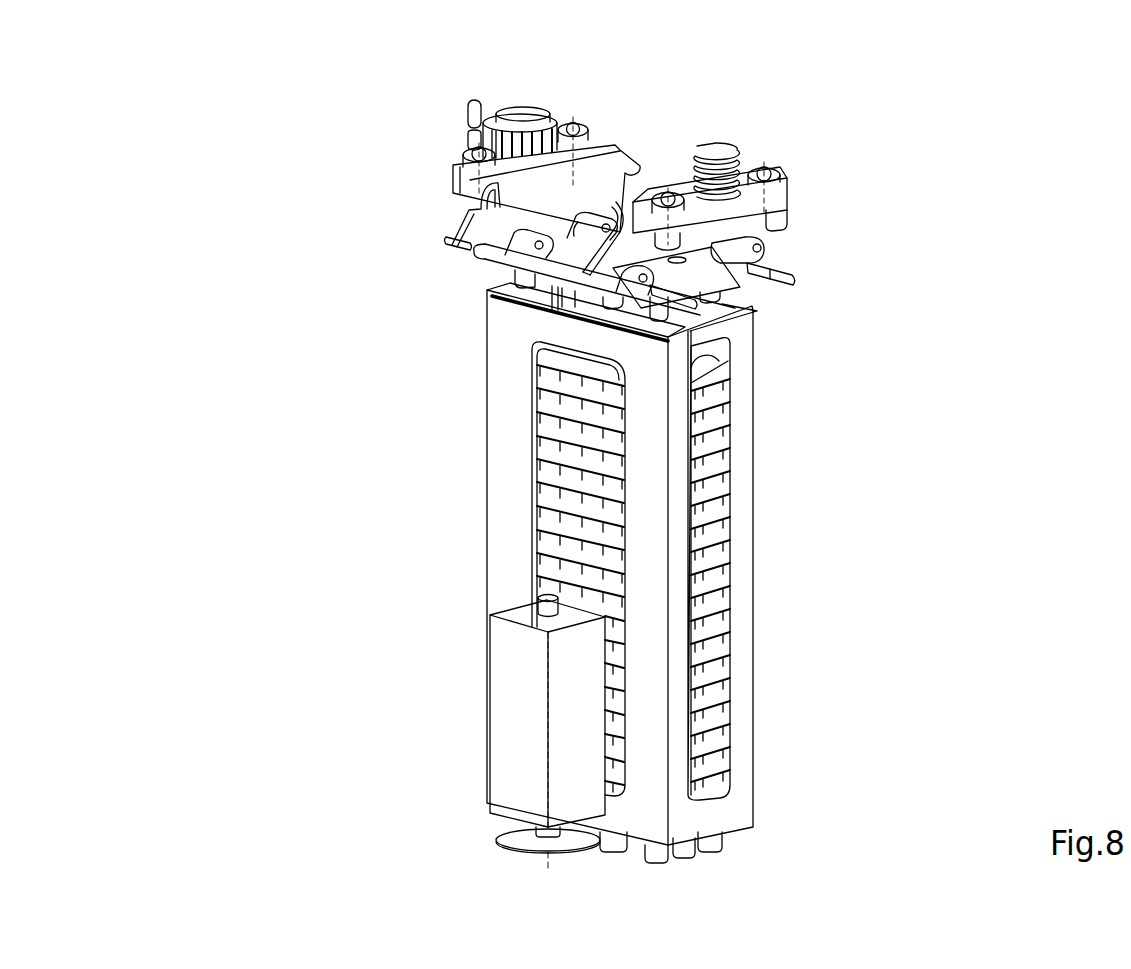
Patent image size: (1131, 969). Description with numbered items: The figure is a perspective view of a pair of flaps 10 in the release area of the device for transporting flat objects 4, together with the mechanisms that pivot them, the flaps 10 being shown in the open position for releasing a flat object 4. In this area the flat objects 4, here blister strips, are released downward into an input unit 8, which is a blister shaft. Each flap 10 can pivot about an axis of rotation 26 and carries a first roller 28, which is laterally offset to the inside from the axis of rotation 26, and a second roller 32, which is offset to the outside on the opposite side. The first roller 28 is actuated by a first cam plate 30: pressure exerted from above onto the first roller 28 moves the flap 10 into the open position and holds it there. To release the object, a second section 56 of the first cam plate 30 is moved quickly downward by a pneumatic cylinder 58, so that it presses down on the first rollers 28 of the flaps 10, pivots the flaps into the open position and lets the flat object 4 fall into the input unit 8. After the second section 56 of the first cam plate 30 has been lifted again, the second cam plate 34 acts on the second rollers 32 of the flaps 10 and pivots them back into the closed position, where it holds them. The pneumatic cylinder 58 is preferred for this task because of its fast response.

The flat object 4 is at (712, 466).
The input unit 8 is at (596, 577).
The flap 10 is at (767, 250).
The axis of rotation 26 is at (785, 288).
The first roller 28 is at (498, 250).
The first cam plate 30 is at (407, 185).
The second section of the first cam plate 56 is at (510, 210).
The second roller 32 is at (618, 275).
The second cam plate 34 is at (620, 257).
The pneumatic cylinder 58 is at (515, 118).